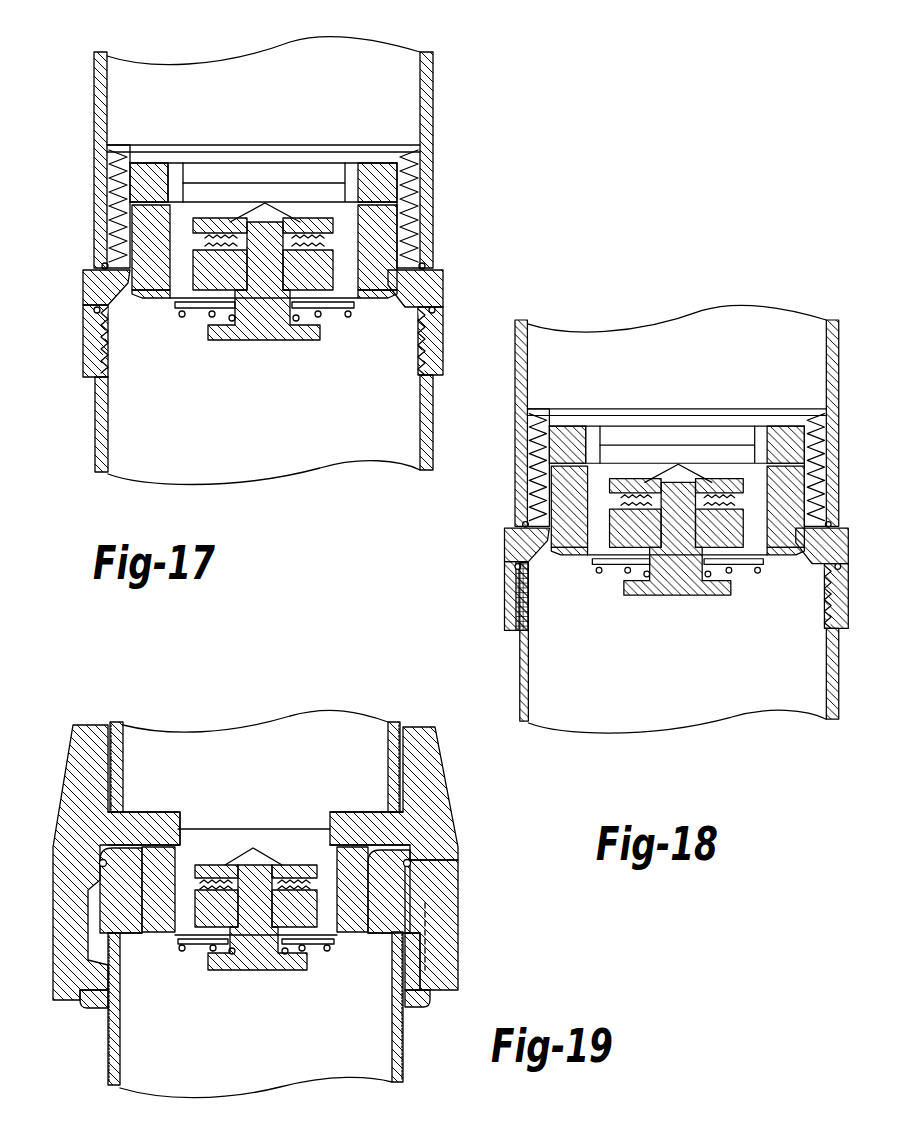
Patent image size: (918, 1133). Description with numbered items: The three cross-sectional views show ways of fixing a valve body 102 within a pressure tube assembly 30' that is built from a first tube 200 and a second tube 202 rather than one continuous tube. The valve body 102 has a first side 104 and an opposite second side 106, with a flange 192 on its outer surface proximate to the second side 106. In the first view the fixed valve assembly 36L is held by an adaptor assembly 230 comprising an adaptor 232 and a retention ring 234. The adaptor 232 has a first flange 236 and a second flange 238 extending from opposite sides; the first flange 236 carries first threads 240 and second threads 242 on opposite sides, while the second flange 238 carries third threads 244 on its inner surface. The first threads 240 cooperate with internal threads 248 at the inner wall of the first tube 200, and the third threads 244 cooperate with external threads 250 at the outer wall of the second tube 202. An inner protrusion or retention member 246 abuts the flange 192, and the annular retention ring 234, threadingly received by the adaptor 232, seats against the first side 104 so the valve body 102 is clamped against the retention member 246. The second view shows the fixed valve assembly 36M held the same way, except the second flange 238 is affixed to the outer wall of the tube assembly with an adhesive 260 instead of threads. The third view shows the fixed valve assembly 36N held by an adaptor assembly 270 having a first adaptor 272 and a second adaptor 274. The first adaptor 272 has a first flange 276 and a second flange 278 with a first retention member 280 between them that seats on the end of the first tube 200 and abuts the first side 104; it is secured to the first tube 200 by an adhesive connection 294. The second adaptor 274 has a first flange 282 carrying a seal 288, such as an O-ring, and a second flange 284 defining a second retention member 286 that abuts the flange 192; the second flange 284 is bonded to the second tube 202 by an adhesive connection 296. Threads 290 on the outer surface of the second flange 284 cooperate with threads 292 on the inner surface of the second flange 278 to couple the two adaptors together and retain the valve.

In FIG. 17, the pressure tube assembly 30' is at (253, 33).
In FIG. 18, the pressure tube assembly 30' is at (683, 294).
In FIG. 19, the pressure tube assembly 30' is at (246, 696).
In FIG. 17, the first tube 200 is at (433, 72).
In FIG. 18, the first tube 200 is at (692, 412).
In FIG. 19, the first tube 200 is at (385, 730).
In FIG. 17, the second tube 202 is at (433, 450).
In FIG. 18, the second tube 202 is at (695, 648).
In FIG. 19, the second tube 202 is at (392, 1052).
In FIG. 17, the fixed valve assembly 36L is at (248, 143).
In FIG. 18, the fixed valve assembly 36M is at (676, 391).
In FIG. 19, the fixed valve assembly 36N is at (238, 830).
In FIG. 17, the valve body 102 is at (400, 236).
In FIG. 18, the valve body 102 is at (616, 525).
In FIG. 19, the valve body 102 is at (303, 962).
In FIG. 17, the first side 104 is at (405, 210).
In FIG. 18, the first side 104 is at (734, 478).
In FIG. 19, the first side 104 is at (330, 832).
In FIG. 17, the second side 106 is at (372, 305).
In FIG. 18, the second side 106 is at (697, 541).
In FIG. 19, the second side 106 is at (347, 935).
In FIG. 17, the flange 192 is at (118, 235).
In FIG. 18, the flange 192 is at (526, 506).
In FIG. 19, the flange 192 is at (160, 895).
In FIG. 17, the adaptor assembly 230 is at (458, 299).
In FIG. 18, the adaptor assembly 230 is at (485, 548).
In FIG. 17, the adaptor 232 is at (447, 282).
In FIG. 18, the adaptor 232 is at (835, 557).
In FIG. 17, the retention ring 234 is at (363, 168).
In FIG. 18, the retention ring 234 is at (676, 415).
In FIG. 17, the first flange 236 is at (115, 147).
In FIG. 18, the first flange 236 is at (542, 440).
In FIG. 17, the second flange 238 is at (88, 385).
In FIG. 18, the second flange 238 is at (502, 628).
In FIG. 17, the first threads 240 is at (143, 178).
In FIG. 18, the first threads 240 is at (581, 422).
In FIG. 17, the second threads 242 is at (388, 150).
In FIG. 18, the second threads 242 is at (808, 436).
In FIG. 17, the third threads 244 is at (90, 330).
In FIG. 17, the retention member 246 is at (140, 310).
In FIG. 18, the retention member 246 is at (564, 574).
In FIG. 17, the internal threads 248 is at (108, 152).
In FIG. 18, the internal threads 248 is at (509, 407).
In FIG. 17, the external threads 250 is at (110, 345).
In FIG. 18, the adhesive 260 is at (506, 640).
In FIG. 19, the adaptor assembly 270 is at (473, 869).
In FIG. 19, the first adaptor 272 is at (440, 775).
In FIG. 19, the second adaptor 274 is at (418, 1007).
In FIG. 19, the first flange 276 is at (420, 730).
In FIG. 19, the second flange 278 is at (455, 946).
In FIG. 19, the first retention member 280 is at (133, 812).
In FIG. 19, the first flange 282 is at (143, 863).
In FIG. 19, the second flange 284 is at (430, 995).
In FIG. 19, the second retention member 286 is at (155, 935).
In FIG. 19, the seal 288 is at (103, 860).
In FIG. 19, the threads 290 is at (430, 968).
In FIG. 19, the threads 292 is at (455, 906).
In FIG. 19, the adhesive connection 294 is at (112, 735).
In FIG. 19, the adhesive connection 296 is at (108, 1010).